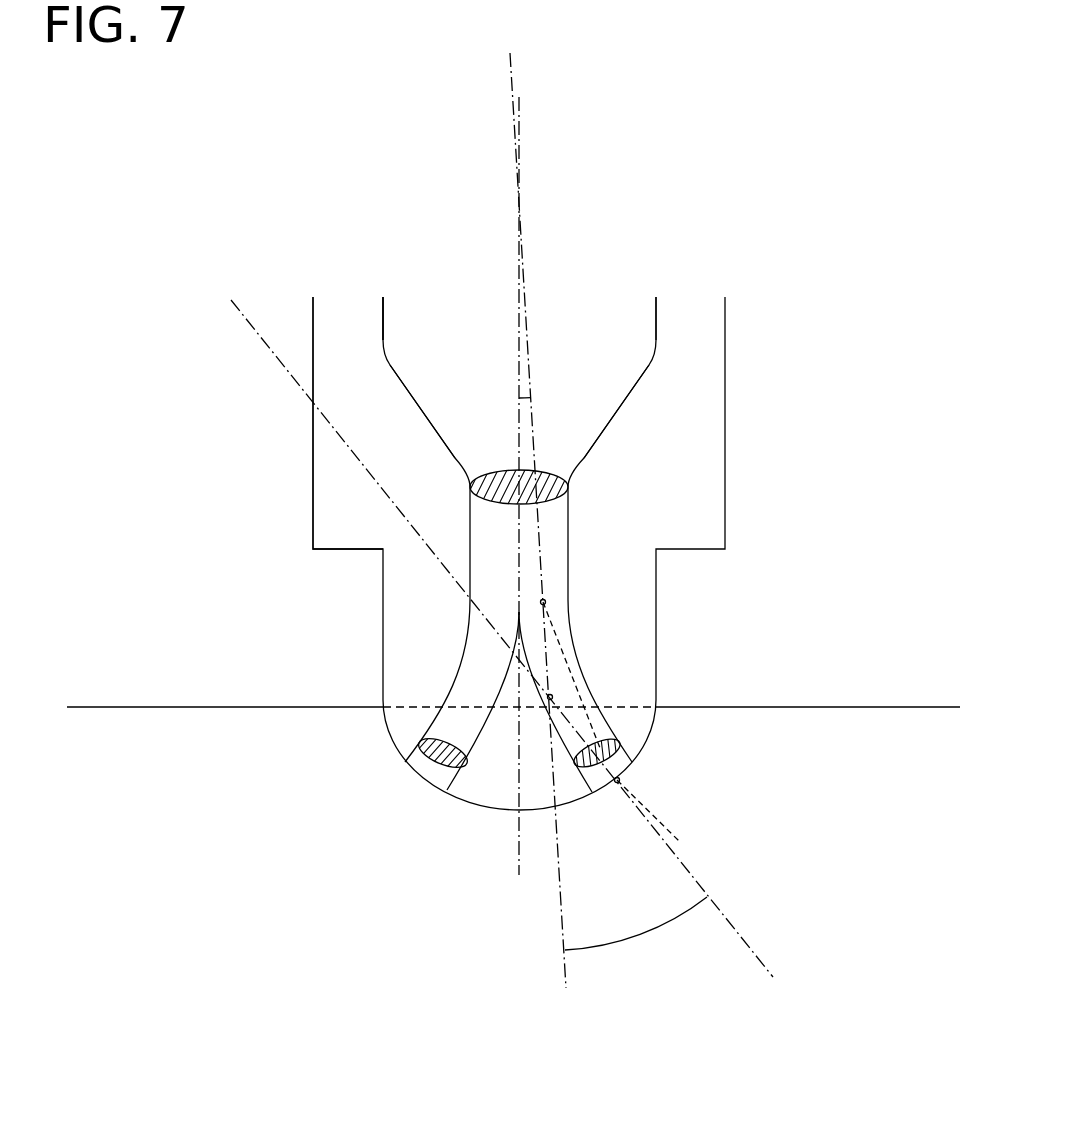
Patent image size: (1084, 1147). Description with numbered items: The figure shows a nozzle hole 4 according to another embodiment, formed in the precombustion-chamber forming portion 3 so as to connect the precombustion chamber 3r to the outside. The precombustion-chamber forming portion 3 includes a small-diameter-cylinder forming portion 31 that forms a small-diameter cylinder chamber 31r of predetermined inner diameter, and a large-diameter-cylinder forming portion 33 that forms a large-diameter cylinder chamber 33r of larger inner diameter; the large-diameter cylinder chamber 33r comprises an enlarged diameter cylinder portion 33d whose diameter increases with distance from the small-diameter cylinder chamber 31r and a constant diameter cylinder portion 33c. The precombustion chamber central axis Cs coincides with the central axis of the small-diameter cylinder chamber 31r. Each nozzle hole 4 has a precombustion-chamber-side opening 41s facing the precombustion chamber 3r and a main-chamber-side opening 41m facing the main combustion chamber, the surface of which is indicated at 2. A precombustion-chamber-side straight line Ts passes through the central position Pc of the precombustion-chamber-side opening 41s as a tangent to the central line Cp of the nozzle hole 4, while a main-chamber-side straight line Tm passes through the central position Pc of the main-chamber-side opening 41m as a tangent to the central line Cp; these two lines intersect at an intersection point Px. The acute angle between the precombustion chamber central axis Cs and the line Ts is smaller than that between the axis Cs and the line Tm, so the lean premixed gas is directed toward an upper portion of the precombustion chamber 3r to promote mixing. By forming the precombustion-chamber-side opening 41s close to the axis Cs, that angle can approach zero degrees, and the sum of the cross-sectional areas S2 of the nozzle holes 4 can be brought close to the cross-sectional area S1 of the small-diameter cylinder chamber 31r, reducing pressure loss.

The precombustion-chamber forming portion 3 is at (875, 325).
The large-diameter-cylinder forming portion 33 is at (825, 297).
The constant diameter cylinder portion 33c is at (657, 315).
The enlarged diameter cylinder portion 33d is at (657, 392).
The small-diameter-cylinder forming portion 31 is at (574, 518).
The precombustion chamber 3r is at (145, 432).
The large-diameter cylinder chamber 33r is at (212, 413).
The small-diameter cylinder chamber 31r is at (483, 518).
The cross-sectional area of the small-diameter cylinder chamber S1 is at (507, 501).
The cross-sectional area of the nozzle hole S2 is at (412, 773).
The main-chamber-side opening 41m is at (422, 783).
The precombustion-chamber-side opening 41s is at (557, 603).
The nozzle hole 4 is at (607, 720).
The workpiece surface 2 is at (146, 706).
The precombustion chamber central axis Cs is at (517, 277).
The precombustion-chamber-side straight line Ts is at (512, 75).
The main-chamber-side straight line Tm is at (262, 352).
The central position Pc is at (546, 601).
The intersection point Px is at (552, 696).
The central line Cp is at (665, 827).